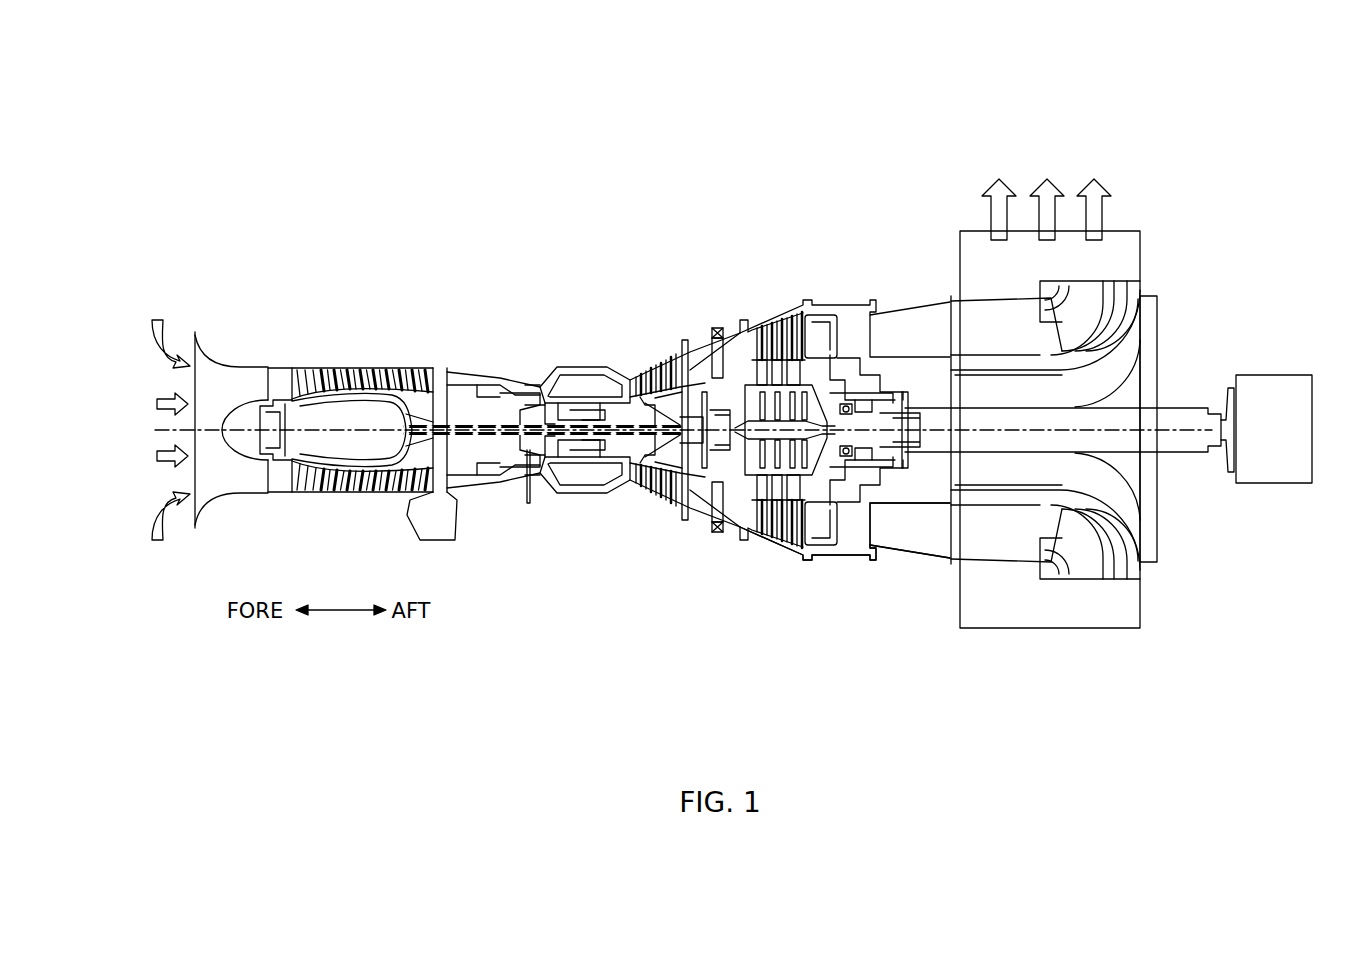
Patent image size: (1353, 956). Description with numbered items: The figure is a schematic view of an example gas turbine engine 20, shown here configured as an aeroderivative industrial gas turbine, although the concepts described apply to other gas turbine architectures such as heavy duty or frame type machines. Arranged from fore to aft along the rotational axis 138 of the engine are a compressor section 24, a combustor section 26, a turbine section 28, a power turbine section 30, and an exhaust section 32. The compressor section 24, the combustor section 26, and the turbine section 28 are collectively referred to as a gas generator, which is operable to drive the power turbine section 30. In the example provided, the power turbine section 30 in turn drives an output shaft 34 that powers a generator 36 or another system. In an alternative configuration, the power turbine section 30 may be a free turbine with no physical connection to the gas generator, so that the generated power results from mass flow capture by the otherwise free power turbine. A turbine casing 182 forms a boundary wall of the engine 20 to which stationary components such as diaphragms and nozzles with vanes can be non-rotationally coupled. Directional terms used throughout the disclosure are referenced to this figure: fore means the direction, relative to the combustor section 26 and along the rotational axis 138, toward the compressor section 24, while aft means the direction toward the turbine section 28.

The gas turbine engine 20 is at (745, 106).
The compressor section 24 is at (525, 281).
The combustor section 26 is at (613, 281).
The turbine section 28 is at (613, 281).
The power turbine section 30 is at (728, 281).
The exhaust section 32 is at (1140, 152).
The output shaft 34 is at (1182, 448).
The generator 36 is at (1274, 429).
The rotational axis 138 is at (348, 432).
The turbine casing 182 is at (780, 555).